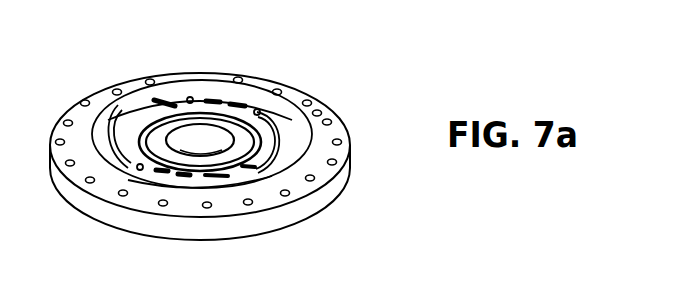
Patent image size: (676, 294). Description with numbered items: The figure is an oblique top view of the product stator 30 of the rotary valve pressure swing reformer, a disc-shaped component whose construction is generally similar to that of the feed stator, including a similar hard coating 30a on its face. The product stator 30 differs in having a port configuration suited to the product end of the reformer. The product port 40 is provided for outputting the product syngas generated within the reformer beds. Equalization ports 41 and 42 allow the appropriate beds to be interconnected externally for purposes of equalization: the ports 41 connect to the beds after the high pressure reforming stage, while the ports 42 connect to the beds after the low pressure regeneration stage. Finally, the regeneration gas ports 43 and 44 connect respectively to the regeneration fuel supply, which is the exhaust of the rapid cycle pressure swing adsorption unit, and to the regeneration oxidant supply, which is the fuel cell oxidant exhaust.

The product stator 30 is at (347, 163).
The hard coating 30a is at (290, 124).
The product port 40 is at (332, 200).
The equalization ports 41 is at (140, 170).
The equalization ports 42 is at (257, 112).
The regeneration gas port 43 is at (188, 99).
The regeneration gas port 44 is at (117, 118).